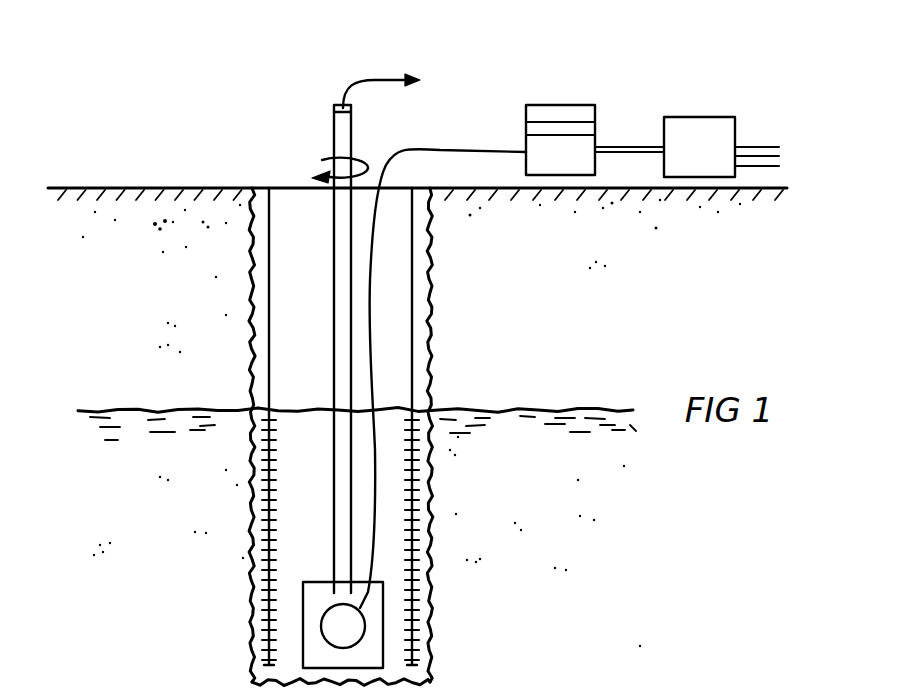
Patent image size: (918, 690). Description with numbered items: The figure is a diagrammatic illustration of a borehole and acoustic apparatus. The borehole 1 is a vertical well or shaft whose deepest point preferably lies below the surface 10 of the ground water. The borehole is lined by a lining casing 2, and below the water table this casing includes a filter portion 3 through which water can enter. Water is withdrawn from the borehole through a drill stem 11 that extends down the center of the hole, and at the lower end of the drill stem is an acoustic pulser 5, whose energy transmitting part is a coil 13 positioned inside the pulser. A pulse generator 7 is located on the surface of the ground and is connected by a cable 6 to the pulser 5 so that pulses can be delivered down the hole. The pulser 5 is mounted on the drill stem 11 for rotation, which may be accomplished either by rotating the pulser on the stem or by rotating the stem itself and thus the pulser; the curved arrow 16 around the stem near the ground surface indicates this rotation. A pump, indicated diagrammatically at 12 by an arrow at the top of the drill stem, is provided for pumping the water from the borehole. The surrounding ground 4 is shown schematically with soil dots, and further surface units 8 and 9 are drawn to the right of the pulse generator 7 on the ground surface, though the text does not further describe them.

The borehole 1 is at (432, 310).
The lining casing 2 is at (413, 364).
The filter portion 3 is at (413, 485).
The soil formation 4 is at (638, 535).
The acoustic pulser 5 is at (373, 650).
The cable 6 is at (372, 267).
The pulse generator 7 is at (570, 113).
The evaluation unit 8 is at (695, 127).
The output lines 9 is at (765, 147).
The surface of the ground water 10 is at (550, 410).
The drill stem 11 is at (334, 135).
The pump 12 is at (378, 82).
The coil 13 is at (345, 635).
The rotation arrow 16 is at (328, 156).